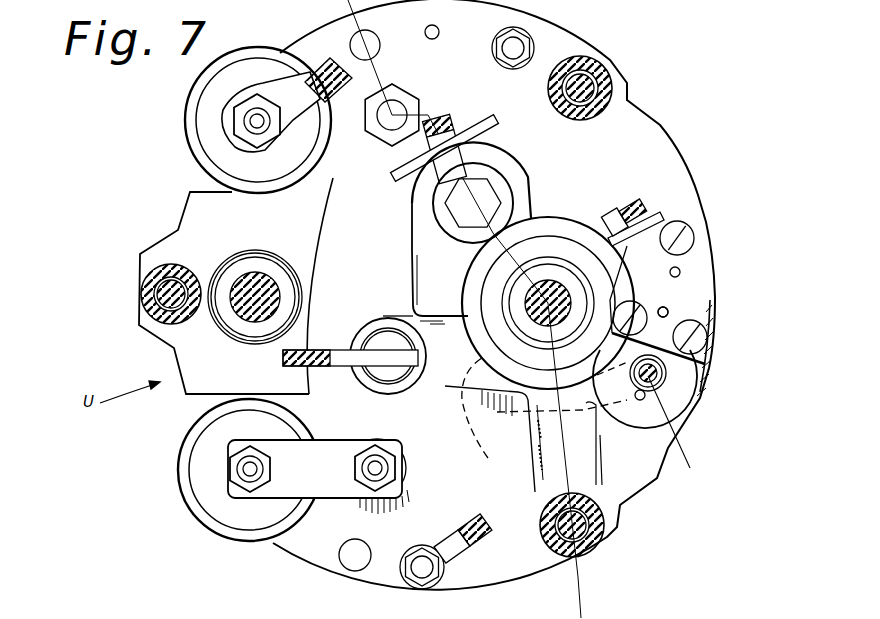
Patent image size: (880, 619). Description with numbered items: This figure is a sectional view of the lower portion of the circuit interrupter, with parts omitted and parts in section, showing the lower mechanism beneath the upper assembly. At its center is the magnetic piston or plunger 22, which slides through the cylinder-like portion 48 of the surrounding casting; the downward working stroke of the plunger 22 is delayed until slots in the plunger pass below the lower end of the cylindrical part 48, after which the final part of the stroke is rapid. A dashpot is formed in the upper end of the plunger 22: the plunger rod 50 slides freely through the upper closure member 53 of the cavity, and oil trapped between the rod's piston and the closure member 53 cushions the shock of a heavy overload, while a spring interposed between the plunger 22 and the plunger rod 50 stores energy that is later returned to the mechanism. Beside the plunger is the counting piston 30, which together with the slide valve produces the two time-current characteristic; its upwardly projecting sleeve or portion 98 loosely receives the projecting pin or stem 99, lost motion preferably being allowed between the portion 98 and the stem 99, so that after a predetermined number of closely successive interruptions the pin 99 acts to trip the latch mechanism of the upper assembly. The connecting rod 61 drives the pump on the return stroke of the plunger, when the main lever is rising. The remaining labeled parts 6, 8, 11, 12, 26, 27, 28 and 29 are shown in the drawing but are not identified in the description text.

The boss 6 is at (248, 273).
The section line 8- 8 is at (345, 11).
The pulley / section line 11- 11 is at (208, 520).
The wheel / section line 12- 12 is at (192, 131).
The magnetic plunger 22 is at (555, 252).
The boss 26 is at (377, 347).
The housing body 27 is at (387, 317).
The hidden passage 28 is at (544, 421).
The cam plate 29 is at (693, 384).
The counting piston 30 is at (667, 388).
The cylinder-like portion 48 is at (582, 233).
The plunger rod 50 is at (568, 322).
The upper closure member 53 is at (530, 326).
The connecting rod 61 is at (345, 368).
The sleeve portion of counting piston 98 is at (656, 350).
The projecting pin 99 is at (683, 428).